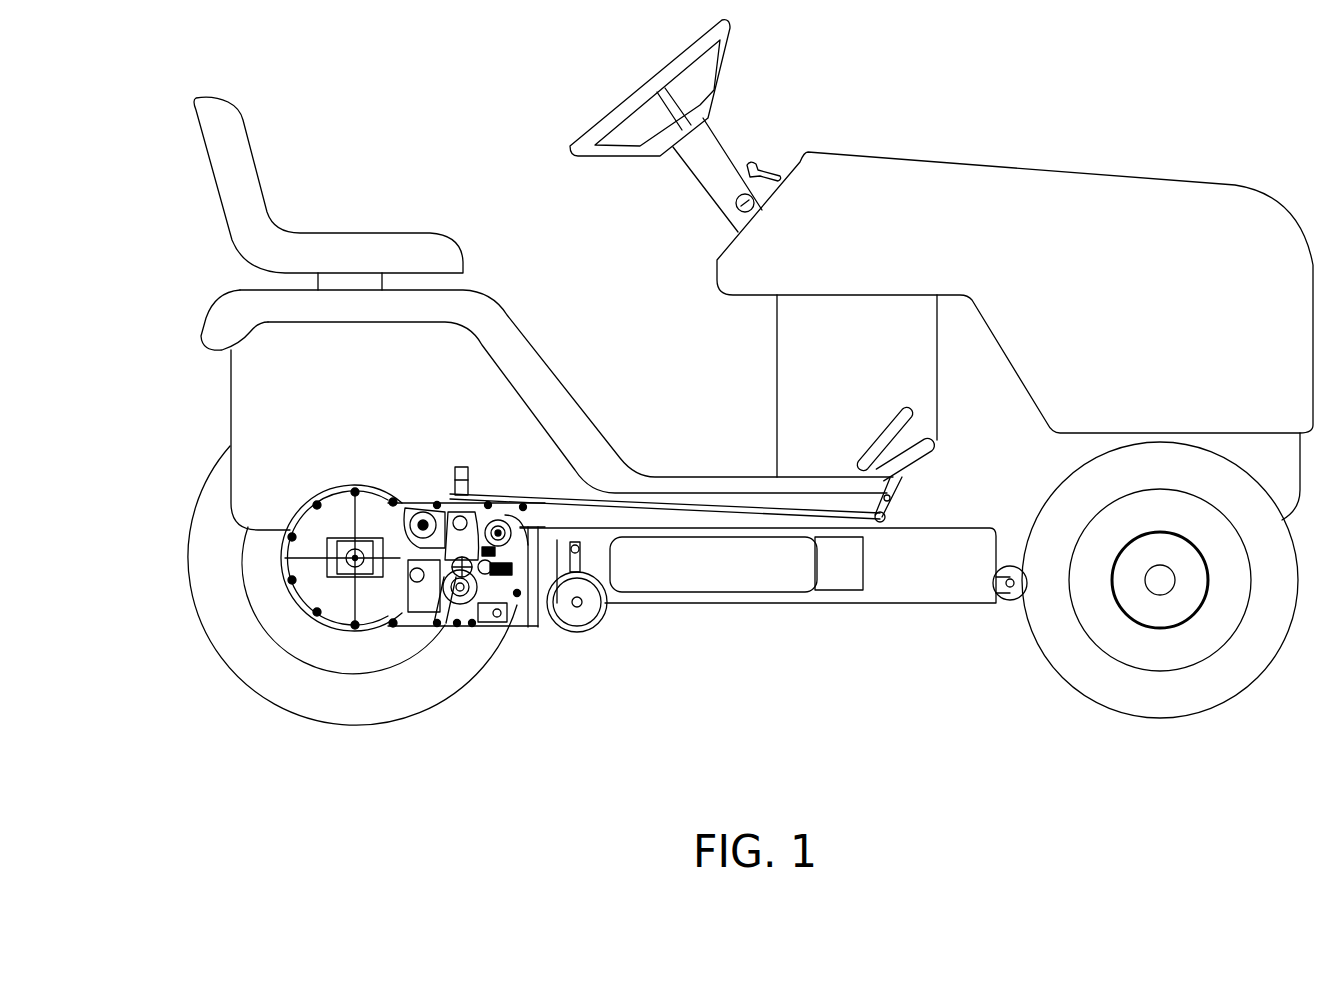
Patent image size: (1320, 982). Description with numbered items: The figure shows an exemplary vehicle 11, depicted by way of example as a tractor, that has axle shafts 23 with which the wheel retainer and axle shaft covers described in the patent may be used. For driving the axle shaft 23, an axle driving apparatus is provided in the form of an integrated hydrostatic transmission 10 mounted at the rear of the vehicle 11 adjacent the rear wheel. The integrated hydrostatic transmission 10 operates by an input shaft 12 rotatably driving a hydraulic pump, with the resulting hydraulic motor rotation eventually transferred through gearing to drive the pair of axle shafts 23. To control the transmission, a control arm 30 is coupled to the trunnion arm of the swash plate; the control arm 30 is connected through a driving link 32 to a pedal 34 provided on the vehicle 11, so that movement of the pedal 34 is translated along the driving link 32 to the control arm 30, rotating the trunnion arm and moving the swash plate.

The integrated hydrostatic transmission 10 is at (458, 630).
The vehicle 11 is at (903, 153).
The input shaft 12 is at (466, 470).
The axle shaft 23 is at (328, 545).
The control arm 30 is at (450, 502).
The driving link 32 is at (698, 507).
The pedal 34 is at (877, 440).